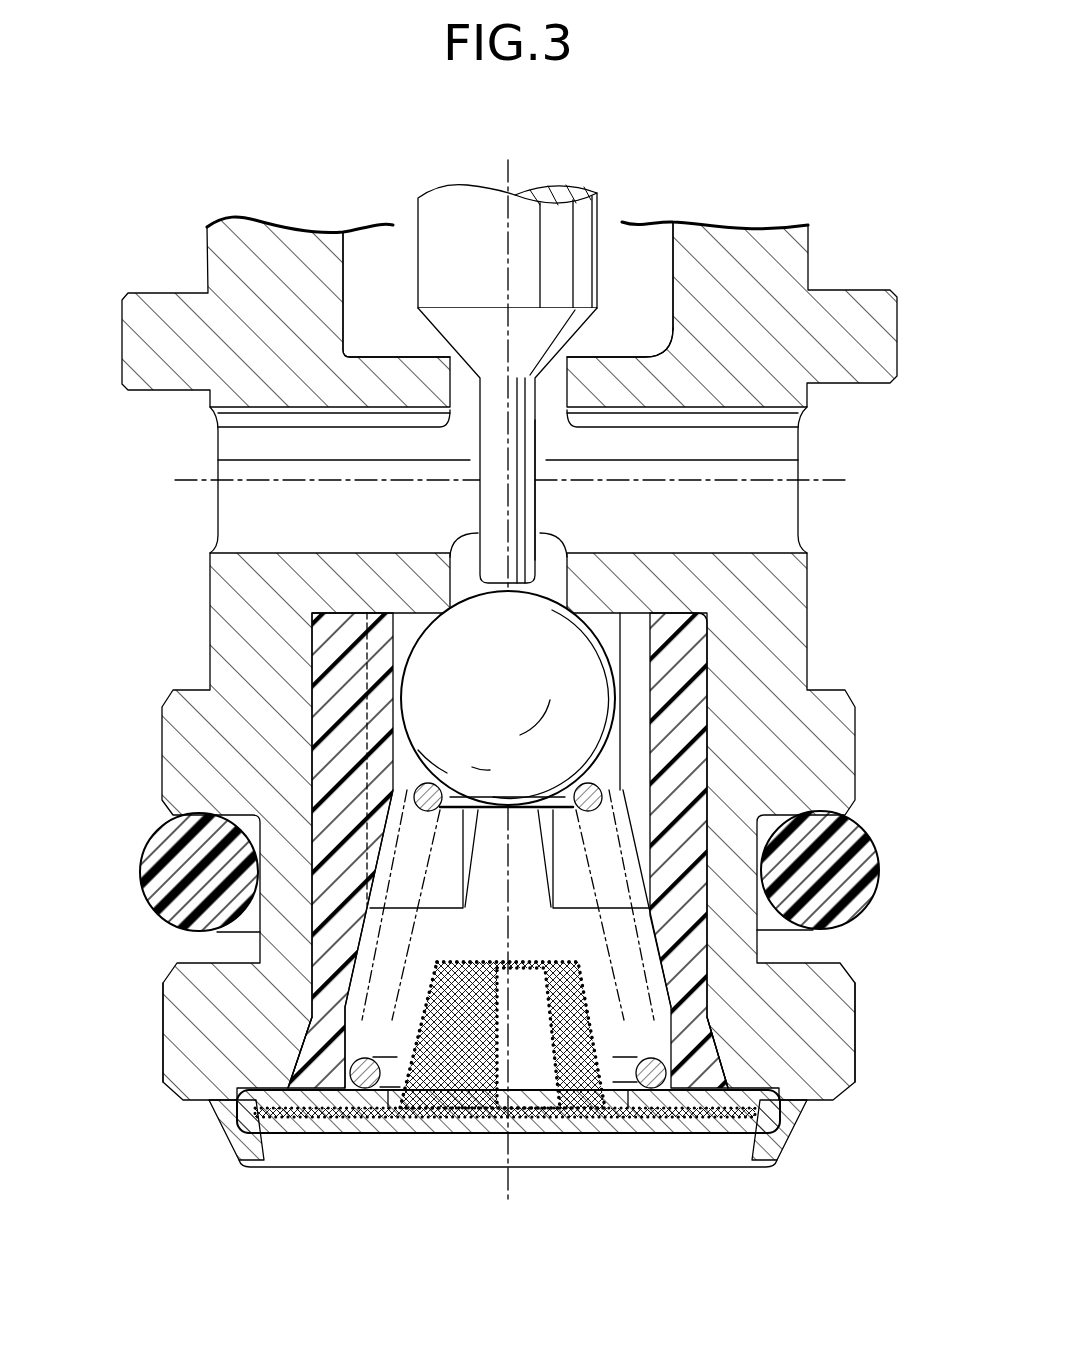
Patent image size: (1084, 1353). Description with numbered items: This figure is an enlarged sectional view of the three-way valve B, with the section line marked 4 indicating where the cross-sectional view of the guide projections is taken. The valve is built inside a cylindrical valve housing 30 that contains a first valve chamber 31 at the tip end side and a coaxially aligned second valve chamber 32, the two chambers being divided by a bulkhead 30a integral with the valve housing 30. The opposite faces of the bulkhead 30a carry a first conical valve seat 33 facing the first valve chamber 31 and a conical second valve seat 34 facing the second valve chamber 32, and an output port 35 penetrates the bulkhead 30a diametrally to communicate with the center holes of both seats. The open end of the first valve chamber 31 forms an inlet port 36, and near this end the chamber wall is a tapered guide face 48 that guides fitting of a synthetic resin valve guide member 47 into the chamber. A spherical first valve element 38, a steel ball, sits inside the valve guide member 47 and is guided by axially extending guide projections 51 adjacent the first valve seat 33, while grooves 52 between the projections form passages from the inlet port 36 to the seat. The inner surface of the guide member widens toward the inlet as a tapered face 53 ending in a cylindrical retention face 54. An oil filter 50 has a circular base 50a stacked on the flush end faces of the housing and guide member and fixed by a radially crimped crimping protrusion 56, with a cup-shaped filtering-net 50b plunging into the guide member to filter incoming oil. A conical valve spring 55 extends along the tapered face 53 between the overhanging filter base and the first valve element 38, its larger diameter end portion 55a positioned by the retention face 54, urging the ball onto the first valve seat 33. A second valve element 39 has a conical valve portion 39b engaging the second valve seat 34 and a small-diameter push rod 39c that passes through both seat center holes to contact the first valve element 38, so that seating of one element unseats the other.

The valve housing 30 is at (772, 262).
The bulkhead 30a is at (620, 385).
The first valve chamber 31 is at (707, 648).
The second valve chamber 32 is at (672, 268).
The first conical valve seat 33 is at (567, 603).
The second valve seat 34 is at (568, 358).
The output port 35 is at (745, 403).
The inlet port 36 is at (560, 1150).
The first valve element 38 is at (490, 718).
The second valve element 39 is at (490, 291).
The conical valve portion 39b is at (443, 343).
The push rod 39c is at (545, 503).
The valve guide member 47 is at (710, 788).
The tapered guide face 48 is at (727, 1057).
The oil filter 50 is at (470, 1106).
The circular base 50a is at (710, 1117).
The filtering-net 50b is at (492, 962).
The guide projections 51 is at (380, 668).
The grooves 52 is at (650, 765).
The tapered face 53 is at (667, 977).
The cylindrical retention face 54 is at (657, 1107).
The valve spring 55 is at (400, 788).
The larger diameter end portion 55a is at (365, 1107).
The crimping protrusion 56 is at (240, 1140).
The three-way valve B is at (705, 178).
The section line 4- 4 is at (154, 703).